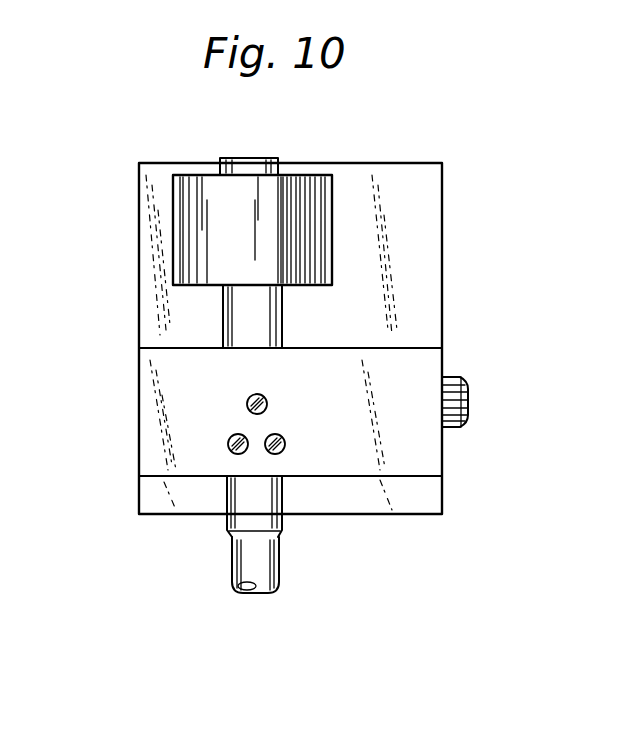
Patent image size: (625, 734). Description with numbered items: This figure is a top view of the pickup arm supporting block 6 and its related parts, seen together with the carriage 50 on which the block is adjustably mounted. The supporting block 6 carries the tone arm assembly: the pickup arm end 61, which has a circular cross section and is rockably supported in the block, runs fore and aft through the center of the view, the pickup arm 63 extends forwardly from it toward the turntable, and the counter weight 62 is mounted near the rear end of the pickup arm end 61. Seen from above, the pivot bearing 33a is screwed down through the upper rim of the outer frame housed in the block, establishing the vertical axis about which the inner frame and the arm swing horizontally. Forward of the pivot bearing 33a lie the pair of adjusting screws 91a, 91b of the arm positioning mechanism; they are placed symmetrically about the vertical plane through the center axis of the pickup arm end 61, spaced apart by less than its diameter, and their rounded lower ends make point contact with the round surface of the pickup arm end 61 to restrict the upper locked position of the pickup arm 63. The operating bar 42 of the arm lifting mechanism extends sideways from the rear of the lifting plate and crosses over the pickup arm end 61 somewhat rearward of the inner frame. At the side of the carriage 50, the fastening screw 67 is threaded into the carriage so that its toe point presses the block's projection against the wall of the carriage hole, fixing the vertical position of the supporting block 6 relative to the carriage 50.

The carriage 50 is at (492, 247).
The operating bar 42 is at (395, 347).
The pickup arm supporting block 6 is at (147, 376).
The counter weight 62 is at (298, 182).
The pickup arm end 61 is at (248, 510).
The pickup arm 63 is at (270, 556).
The pivot bearing 33a is at (262, 393).
The adjusting screw 91a is at (228, 444).
The adjusting screw 91b is at (286, 444).
The fastening screw 67 is at (455, 413).